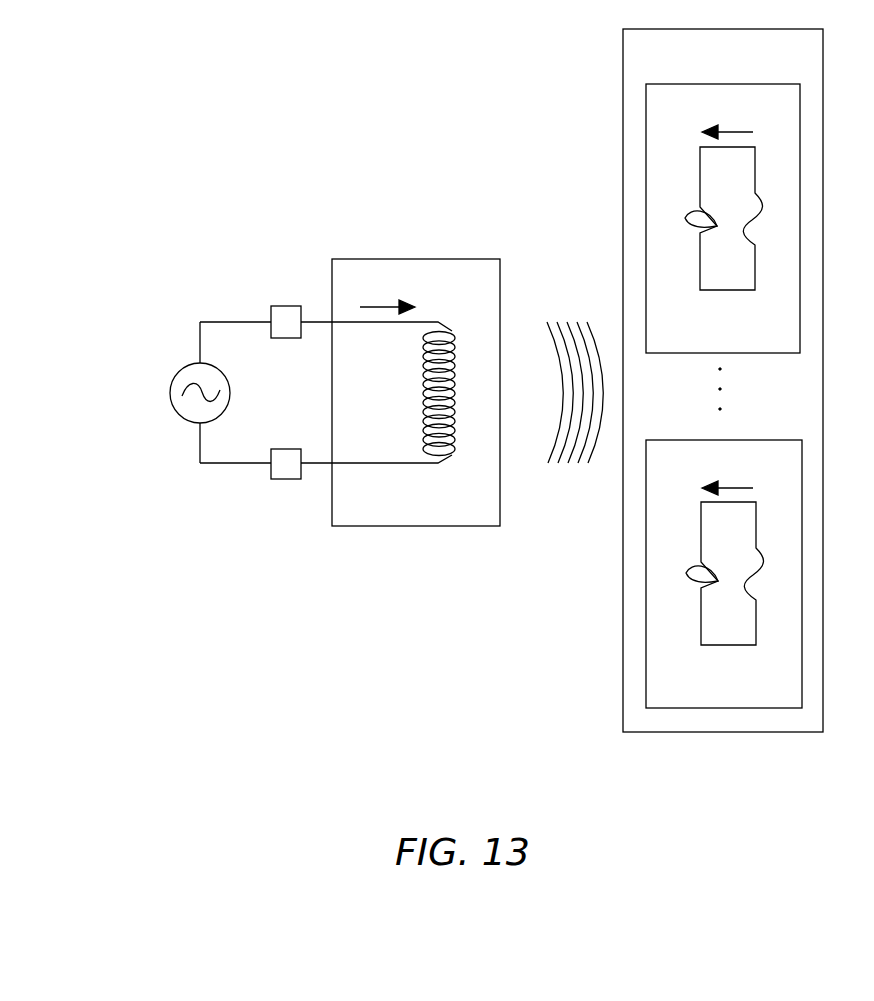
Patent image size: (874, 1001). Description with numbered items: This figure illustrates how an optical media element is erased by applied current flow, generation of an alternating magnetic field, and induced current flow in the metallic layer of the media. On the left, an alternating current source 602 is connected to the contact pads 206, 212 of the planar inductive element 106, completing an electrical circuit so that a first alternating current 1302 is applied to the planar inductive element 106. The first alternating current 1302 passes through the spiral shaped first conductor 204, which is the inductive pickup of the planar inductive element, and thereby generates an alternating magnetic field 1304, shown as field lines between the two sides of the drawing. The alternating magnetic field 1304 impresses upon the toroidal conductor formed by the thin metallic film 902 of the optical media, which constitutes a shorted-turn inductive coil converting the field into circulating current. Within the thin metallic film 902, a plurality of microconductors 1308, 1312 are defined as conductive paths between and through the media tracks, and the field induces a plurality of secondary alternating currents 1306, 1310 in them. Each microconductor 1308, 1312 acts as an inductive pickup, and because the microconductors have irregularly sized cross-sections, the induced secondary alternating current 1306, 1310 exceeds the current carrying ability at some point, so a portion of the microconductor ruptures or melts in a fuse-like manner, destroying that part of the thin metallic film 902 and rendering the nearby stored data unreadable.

The planar inductive element 106 is at (423, 258).
The contact pad 206 is at (283, 305).
The contact pad 212 is at (283, 481).
The spiral shaped first conductor 204 is at (463, 444).
The first alternating current 1302 is at (387, 303).
The alternating current source 602 is at (178, 428).
The alternating magnetic field 1304 is at (573, 300).
The thin metallic film 902 is at (715, 28).
The microconductor 1308 is at (738, 83).
The secondary alternating current 1306 is at (768, 117).
The microconductor 1312 is at (738, 440).
The secondary alternating current 1310 is at (767, 470).